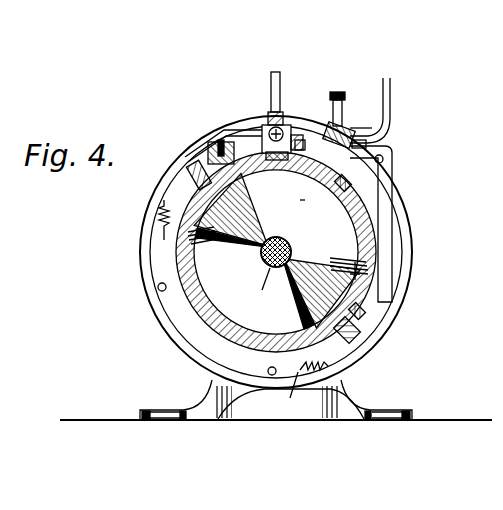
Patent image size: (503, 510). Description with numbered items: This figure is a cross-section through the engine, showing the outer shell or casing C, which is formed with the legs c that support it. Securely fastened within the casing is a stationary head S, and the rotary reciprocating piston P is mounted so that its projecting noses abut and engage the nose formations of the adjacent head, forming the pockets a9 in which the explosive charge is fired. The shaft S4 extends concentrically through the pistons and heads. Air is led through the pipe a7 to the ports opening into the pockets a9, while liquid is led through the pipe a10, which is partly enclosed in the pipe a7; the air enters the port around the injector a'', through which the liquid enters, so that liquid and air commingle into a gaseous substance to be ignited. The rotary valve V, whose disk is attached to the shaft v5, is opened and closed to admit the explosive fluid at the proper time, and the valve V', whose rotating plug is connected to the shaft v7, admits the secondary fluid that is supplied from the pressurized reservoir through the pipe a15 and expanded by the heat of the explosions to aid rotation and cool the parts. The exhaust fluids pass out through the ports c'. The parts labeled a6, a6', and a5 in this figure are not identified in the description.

The pipe a7 is at (430, 256).
The legs c is at (276, 400).
The outer shell or casing C is at (372, 224).
The pockets a9 is at (268, 221).
The pole pieces a6 is at (277, 253).
The conductor tube a6' is at (387, 109).
The ports c' is at (312, 264).
The rotary reciprocating piston P is at (321, 215).
The stationary head S is at (295, 262).
The shaft S4 is at (259, 291).
The valve V' is at (269, 109).
The pipe a15 is at (280, 78).
The injector a'' is at (305, 197).
The pipe a10 is at (218, 138).
The shaft v7 is at (296, 138).
The binding post a5 is at (338, 100).
The rotary valve V is at (360, 85).
The shaft v5 is at (368, 140).